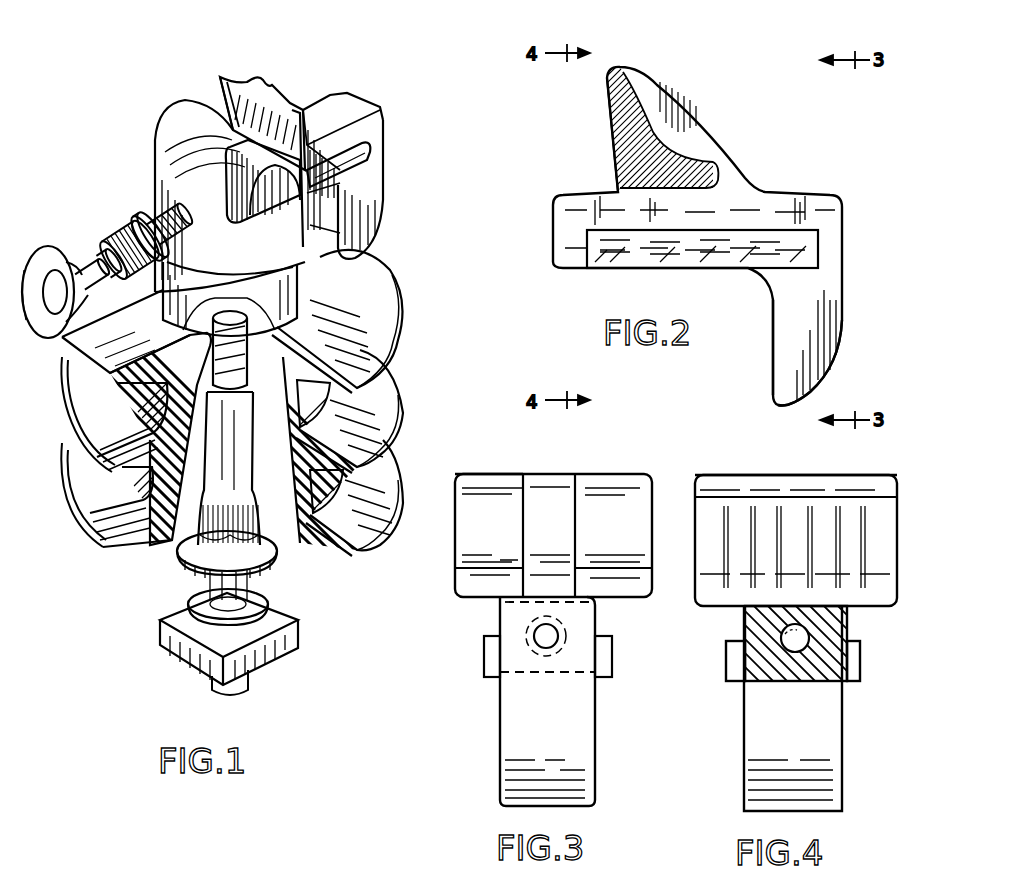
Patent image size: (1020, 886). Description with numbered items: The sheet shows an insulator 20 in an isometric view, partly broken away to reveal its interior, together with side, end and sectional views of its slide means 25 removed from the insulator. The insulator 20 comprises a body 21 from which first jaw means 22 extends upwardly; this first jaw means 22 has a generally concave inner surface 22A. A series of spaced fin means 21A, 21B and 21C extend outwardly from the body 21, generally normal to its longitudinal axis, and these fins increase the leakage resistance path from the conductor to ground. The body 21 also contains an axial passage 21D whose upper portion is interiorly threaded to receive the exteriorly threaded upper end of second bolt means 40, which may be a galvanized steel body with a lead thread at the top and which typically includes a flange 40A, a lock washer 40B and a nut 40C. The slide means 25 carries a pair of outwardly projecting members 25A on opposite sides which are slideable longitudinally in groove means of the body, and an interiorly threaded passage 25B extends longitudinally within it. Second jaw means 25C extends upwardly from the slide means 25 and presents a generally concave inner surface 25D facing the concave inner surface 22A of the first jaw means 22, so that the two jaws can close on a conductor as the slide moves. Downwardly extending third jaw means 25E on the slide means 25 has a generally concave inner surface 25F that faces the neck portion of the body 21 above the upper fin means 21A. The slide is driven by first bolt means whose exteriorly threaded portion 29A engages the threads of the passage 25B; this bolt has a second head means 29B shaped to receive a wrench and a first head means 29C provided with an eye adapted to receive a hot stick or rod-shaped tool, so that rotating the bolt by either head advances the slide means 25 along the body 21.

In FIG. 1, the insulator 20 is at (130, 147).
In FIG. 1, the body 21 is at (265, 260).
In FIG. 1, the fin means 21A is at (398, 290).
In FIG. 1, the fin means 21B is at (400, 395).
In FIG. 1, the fin means 21C is at (400, 472).
In FIG. 1, the axial passage 21D is at (193, 414).
In FIG. 1, the first jaw means 22 is at (175, 117).
In FIG. 1, the concave inner surface 22A is at (265, 220).
In FIG. 1, the slide means 25 is at (308, 94).
In FIG. 2, the slide means 25 is at (752, 165).
In FIG. 3, the slide means 25 is at (473, 713).
In FIG. 4, the slide means 25 is at (730, 688).
In FIG. 1, the outwardly projecting members 25A is at (365, 155).
In FIG. 2, the outwardly projecting members 25A is at (614, 262).
In FIG. 3, the outwardly projecting members 25A is at (484, 661).
In FIG. 4, the outwardly projecting members 25A is at (793, 661).
In FIG. 3, the interiorly threaded passage 25B is at (546, 636).
In FIG. 4, the interiorly threaded passage 25B is at (781, 633).
In FIG. 1, the second jaw means 25C is at (270, 95).
In FIG. 2, the second jaw means 25C is at (688, 108).
In FIG. 3, the second jaw means 25C is at (486, 497).
In FIG. 4, the second jaw means 25C is at (729, 481).
In FIG. 1, the concave inner surface 25D is at (240, 110).
In FIG. 2, the concave inner surface 25D is at (607, 133).
In FIG. 4, the concave inner surface 25D is at (794, 515).
In FIG. 1, the third jaw means 25E is at (378, 178).
In FIG. 2, the third jaw means 25E is at (823, 322).
In FIG. 3, the third jaw means 25E is at (507, 766).
In FIG. 2, the concave inner surface 25F is at (772, 366).
In FIG. 1, the exteriorly threaded portion 29A is at (150, 222).
In FIG. 1, the second head means 29B is at (102, 232).
In FIG. 1, the first head means 29C is at (46, 256).
In FIG. 1, the second bolt means 40 is at (160, 490).
In FIG. 1, the flange 40A is at (195, 556).
In FIG. 1, the lock washer 40B is at (195, 602).
In FIG. 1, the nut 40C is at (185, 650).